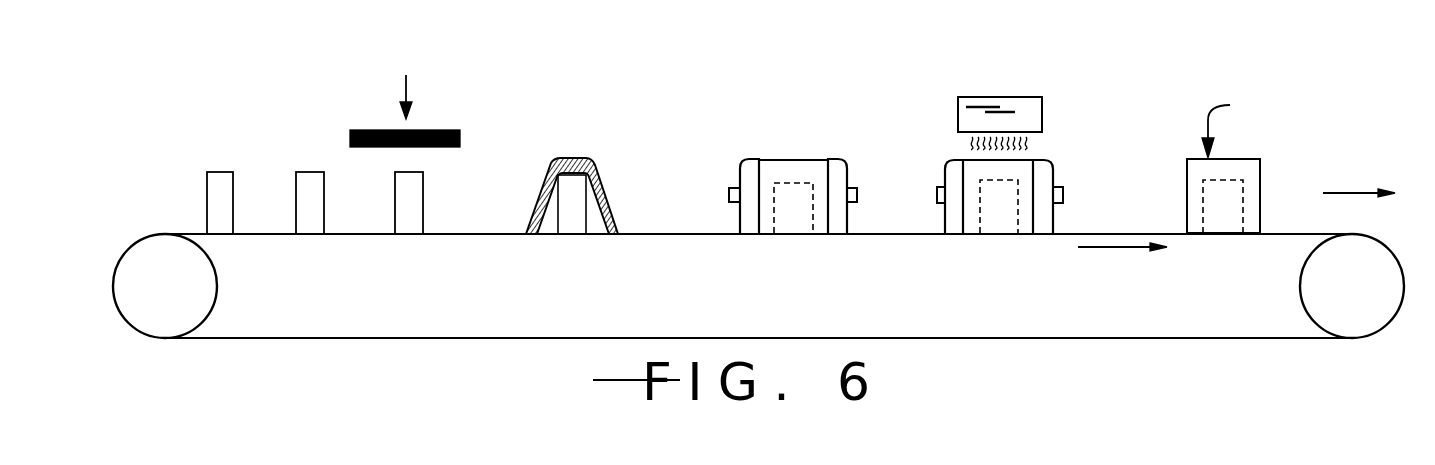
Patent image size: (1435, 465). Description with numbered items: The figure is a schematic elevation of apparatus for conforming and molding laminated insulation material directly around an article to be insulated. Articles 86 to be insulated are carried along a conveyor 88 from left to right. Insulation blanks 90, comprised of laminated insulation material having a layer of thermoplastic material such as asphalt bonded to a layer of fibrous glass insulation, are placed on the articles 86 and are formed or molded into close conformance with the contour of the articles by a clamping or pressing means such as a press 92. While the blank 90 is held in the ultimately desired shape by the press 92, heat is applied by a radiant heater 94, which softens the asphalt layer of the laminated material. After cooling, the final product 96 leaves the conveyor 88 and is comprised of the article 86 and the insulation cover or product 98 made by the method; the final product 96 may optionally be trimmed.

The article 86 is at (300, 172).
The conveyor 88 is at (368, 338).
The insulation blank 90 is at (600, 190).
The press 92 is at (742, 155).
The radiant heater 94 is at (1017, 97).
The final product 96 is at (1243, 119).
The insulation cover 98 is at (1260, 187).